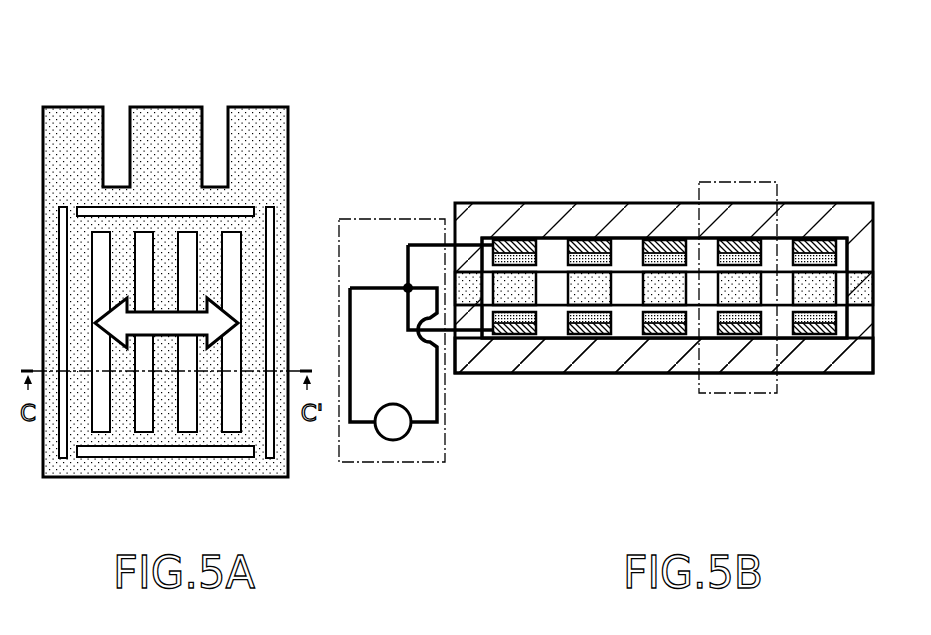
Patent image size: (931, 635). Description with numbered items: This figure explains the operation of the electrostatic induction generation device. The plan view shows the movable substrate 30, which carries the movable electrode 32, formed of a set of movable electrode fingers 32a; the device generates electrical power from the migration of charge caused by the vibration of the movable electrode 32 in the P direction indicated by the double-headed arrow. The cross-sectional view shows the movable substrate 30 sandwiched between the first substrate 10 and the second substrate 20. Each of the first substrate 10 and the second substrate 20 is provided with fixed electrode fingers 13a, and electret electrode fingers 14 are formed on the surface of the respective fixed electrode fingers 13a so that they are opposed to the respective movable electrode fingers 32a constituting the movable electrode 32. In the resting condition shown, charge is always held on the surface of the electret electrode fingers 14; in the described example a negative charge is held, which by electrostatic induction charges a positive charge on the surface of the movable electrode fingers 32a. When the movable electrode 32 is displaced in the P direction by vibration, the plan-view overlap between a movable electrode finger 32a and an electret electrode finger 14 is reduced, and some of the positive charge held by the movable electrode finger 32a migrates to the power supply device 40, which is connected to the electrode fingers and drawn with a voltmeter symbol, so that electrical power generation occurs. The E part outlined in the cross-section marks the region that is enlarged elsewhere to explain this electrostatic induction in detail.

In FIG. 5B, the first substrate 10 is at (482, 350).
In FIG. 5B, the fixed electrode fingers 13a is at (793, 248).
In FIG. 5B, the electret electrode fingers 14 is at (828, 260).
In FIG. 5B, the second substrate 20 is at (568, 218).
In FIG. 5A, the movable substrate 30 is at (282, 149).
In FIG. 5B, the movable substrate 30 is at (862, 297).
In FIG. 5A, the movable electrode 32 is at (166, 216).
In FIG. 5A, the movable electrode fingers 32a is at (78, 412).
In FIG. 5B, the movable electrode fingers 32a is at (532, 288).
In FIG. 5B, the power supply device 40 is at (405, 218).
In FIG. 5A, the P direction P is at (232, 316).
In FIG. 5B, the E part E is at (735, 393).